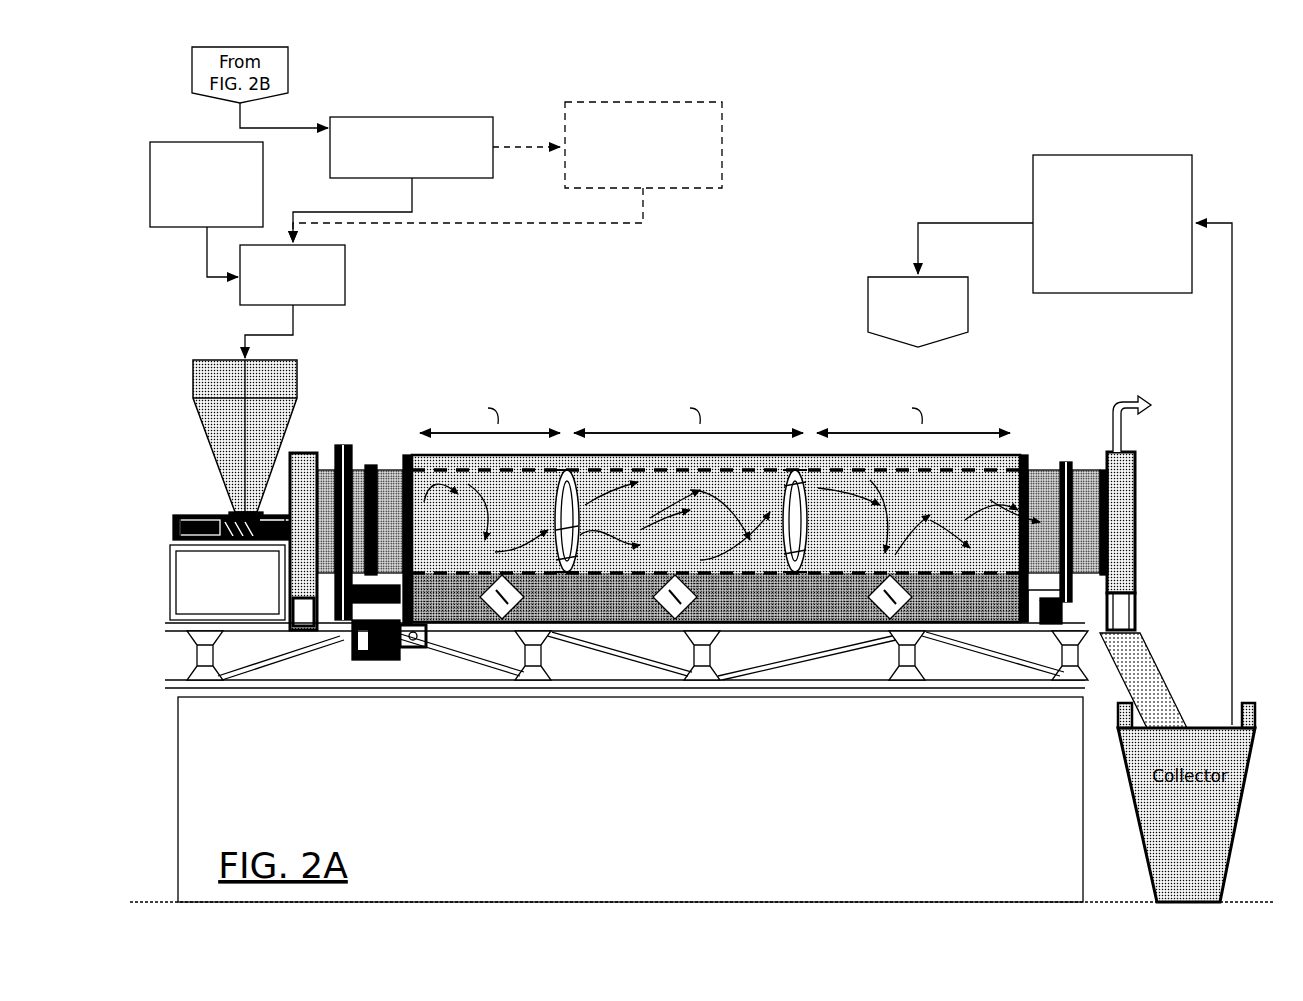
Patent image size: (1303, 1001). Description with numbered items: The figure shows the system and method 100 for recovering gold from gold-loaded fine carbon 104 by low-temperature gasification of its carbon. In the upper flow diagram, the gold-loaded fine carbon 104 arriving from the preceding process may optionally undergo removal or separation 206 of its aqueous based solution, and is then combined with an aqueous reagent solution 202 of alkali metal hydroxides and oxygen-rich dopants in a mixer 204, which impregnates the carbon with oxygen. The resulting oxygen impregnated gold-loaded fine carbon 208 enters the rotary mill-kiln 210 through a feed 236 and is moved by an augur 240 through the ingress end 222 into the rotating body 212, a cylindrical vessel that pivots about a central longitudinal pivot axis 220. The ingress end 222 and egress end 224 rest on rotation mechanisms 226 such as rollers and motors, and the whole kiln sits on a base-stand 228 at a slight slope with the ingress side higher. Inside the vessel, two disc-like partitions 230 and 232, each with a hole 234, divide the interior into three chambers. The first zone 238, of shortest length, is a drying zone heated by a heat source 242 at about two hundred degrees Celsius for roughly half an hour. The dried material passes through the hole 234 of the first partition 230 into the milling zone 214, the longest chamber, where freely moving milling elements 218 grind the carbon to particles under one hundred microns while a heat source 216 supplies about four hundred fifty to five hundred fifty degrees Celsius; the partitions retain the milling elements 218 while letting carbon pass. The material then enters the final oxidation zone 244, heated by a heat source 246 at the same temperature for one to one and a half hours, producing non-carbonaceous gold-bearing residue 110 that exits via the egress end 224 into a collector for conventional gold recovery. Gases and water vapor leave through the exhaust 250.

The system and method for recovering gold 100 is at (1027, 462).
The gold-loaded fine carbon 104 is at (477, 118).
The non-carbonaceous gold-bearing residue 110 is at (1155, 688).
The aqueous reagent solution 202 is at (264, 158).
The mixer 204 is at (292, 275).
The separation of liquid 206 is at (722, 118).
The oxygen impregnated gold-loaded fine carbon 208 is at (296, 324).
The rotary mill-kiln 210 is at (567, 350).
The rotating body 212 is at (612, 582).
The milling zone 214 is at (688, 452).
The heat source 216 is at (673, 614).
The milling elements 218 is at (710, 560).
The central longitudinal pivot axis 220 is at (168, 521).
The ingress end 222 is at (322, 434).
The egress end 224 is at (1142, 491).
The rotation mechanisms 226 is at (397, 667).
The base-stand 228 is at (626, 762).
The first partition 230 is at (578, 524).
The second partition 232 is at (798, 490).
The hole 234 is at (680, 521).
The feed 236 is at (205, 380).
The first zone 238 is at (490, 482).
The augur 240 is at (210, 513).
The heat source 242 is at (498, 614).
The final oxidation zone 244 is at (913, 456).
The heat source 246 is at (887, 614).
The exhaust 250 is at (1148, 422).